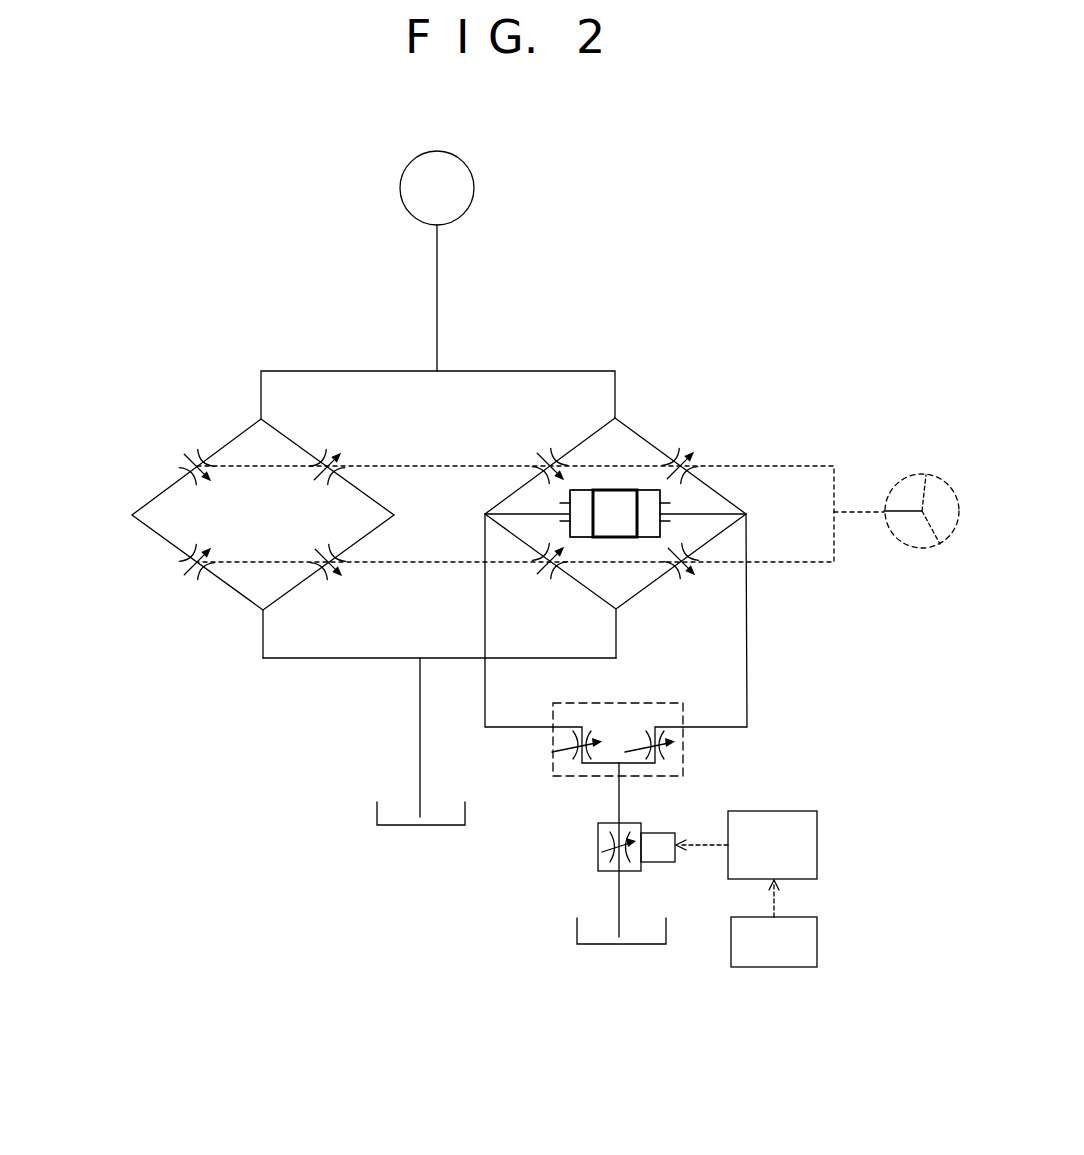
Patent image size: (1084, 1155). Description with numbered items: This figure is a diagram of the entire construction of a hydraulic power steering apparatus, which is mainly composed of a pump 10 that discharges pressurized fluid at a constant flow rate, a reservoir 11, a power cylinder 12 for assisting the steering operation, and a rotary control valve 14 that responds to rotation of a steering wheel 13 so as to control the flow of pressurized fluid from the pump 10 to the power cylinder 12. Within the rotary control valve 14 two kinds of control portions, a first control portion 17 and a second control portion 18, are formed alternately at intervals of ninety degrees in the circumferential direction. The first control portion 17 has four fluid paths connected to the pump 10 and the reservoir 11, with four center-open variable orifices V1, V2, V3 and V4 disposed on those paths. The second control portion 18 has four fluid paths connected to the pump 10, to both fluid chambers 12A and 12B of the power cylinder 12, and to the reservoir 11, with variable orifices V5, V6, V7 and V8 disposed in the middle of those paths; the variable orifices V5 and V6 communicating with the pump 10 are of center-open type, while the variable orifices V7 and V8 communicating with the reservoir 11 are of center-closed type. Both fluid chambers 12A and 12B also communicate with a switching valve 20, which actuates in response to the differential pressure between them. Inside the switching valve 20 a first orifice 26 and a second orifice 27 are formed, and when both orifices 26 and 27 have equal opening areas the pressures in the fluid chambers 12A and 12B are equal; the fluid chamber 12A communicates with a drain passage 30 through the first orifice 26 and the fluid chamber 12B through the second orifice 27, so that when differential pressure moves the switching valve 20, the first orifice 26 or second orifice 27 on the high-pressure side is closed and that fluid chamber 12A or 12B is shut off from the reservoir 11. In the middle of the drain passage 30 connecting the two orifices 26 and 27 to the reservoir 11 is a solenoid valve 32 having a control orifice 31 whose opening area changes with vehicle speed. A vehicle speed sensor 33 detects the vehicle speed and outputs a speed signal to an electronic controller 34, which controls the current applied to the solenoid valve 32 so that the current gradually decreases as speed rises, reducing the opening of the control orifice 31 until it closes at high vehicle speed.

The pump 10 is at (463, 190).
The reservoir 11 is at (435, 826).
The power cylinder 12 is at (630, 490).
The fluid chamber 12A is at (582, 532).
The fluid chamber 12B is at (645, 532).
The steering wheel 13 is at (925, 475).
The rotary control valve 14 is at (228, 383).
The first control portion 17 is at (138, 490).
The second control portion 18 is at (745, 490).
The switching valve 20 is at (622, 712).
The first orifice 26 is at (556, 748).
The second orifice 27 is at (672, 750).
The drain passage 30 is at (619, 800).
The control orifice 31 is at (598, 845).
The solenoid valve 32 is at (607, 871).
The vehicle speed sensor 33 is at (812, 933).
The electronic controller 34 is at (812, 830).
The variable orifice V1 is at (183, 462).
The variable orifice V2 is at (343, 461).
The variable orifice V3 is at (184, 570).
The variable orifice V4 is at (344, 570).
The variable orifice V5 is at (535, 461).
The variable orifice V6 is at (696, 460).
The variable orifice V7 is at (536, 569).
The variable orifice V8 is at (696, 570).